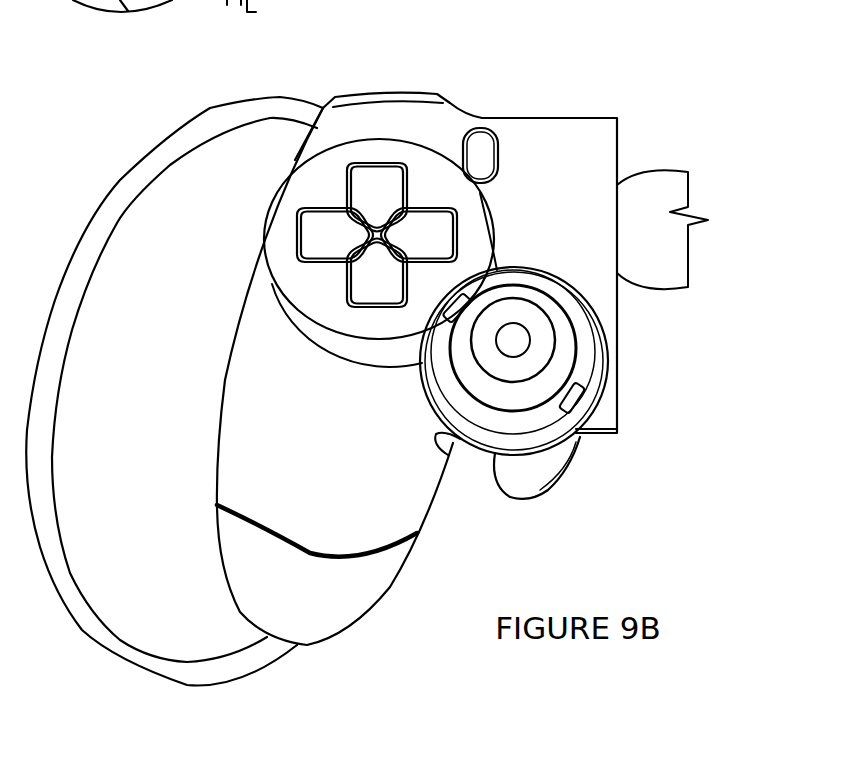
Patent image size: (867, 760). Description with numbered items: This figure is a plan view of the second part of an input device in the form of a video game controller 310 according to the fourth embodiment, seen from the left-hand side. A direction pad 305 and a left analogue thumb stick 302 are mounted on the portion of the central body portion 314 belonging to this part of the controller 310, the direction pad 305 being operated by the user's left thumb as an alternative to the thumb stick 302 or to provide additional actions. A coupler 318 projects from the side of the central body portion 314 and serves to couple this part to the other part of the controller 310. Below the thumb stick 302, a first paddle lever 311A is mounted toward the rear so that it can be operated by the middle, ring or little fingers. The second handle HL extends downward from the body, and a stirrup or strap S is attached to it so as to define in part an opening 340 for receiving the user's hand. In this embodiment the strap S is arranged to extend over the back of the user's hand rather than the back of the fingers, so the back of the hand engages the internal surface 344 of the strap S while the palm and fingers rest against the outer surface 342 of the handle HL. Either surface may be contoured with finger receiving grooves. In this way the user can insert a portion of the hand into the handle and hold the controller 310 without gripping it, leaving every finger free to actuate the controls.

The controller 310 is at (551, 90).
The central body portion 314 is at (588, 178).
The direction pad 305 is at (357, 183).
The left analogue thumb stick 302 is at (538, 328).
The coupler 318 is at (660, 197).
The first paddle lever 311A is at (522, 478).
The opening 340 is at (114, 467).
The outer surface of the handle 342 is at (235, 317).
The internal surface of the strap 344 is at (65, 345).
The strap S is at (107, 223).
The second handle HL is at (353, 575).